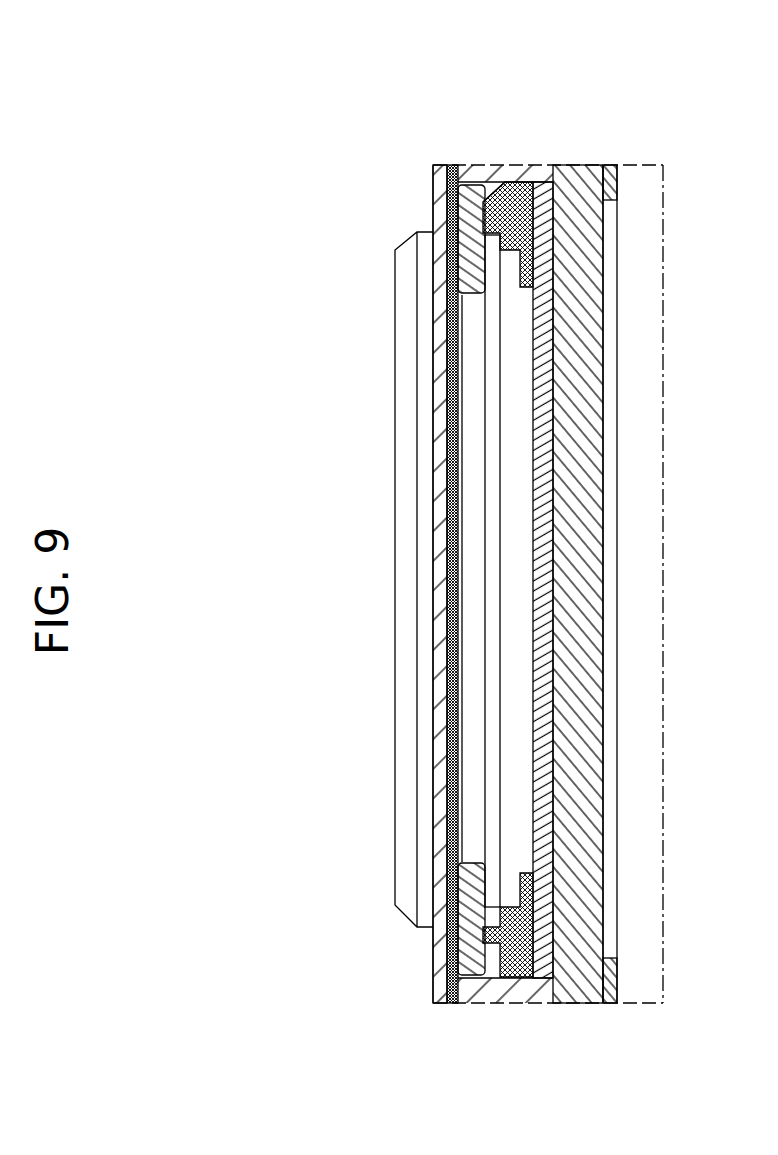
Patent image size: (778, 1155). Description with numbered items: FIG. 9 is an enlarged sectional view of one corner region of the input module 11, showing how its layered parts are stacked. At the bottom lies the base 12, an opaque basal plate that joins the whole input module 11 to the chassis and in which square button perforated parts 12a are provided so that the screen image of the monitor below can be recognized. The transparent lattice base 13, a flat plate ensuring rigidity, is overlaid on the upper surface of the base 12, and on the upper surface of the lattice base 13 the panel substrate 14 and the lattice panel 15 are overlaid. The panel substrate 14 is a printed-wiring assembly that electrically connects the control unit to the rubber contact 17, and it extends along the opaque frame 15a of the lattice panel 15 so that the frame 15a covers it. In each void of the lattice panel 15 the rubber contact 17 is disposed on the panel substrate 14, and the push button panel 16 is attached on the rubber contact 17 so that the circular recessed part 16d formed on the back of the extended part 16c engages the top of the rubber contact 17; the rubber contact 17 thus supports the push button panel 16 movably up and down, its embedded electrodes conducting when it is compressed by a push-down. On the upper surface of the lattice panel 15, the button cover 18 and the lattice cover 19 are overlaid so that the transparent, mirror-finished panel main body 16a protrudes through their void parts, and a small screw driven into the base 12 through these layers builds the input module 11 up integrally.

The input module 11 is at (323, 320).
The base 12 is at (617, 186).
The button perforated part 12a is at (617, 217).
The lattice base 13 is at (592, 176).
The panel substrate 14 is at (543, 405).
The lattice panel 15 is at (535, 176).
The frame 15a is at (507, 180).
The push button panel 16 is at (395, 667).
The panel main body 16a is at (423, 842).
The extended part 16c is at (470, 220).
The recessed part 16d is at (486, 196).
The rubber contact 17 is at (503, 184).
The button cover 18 is at (452, 510).
The lattice cover 19 is at (433, 576).